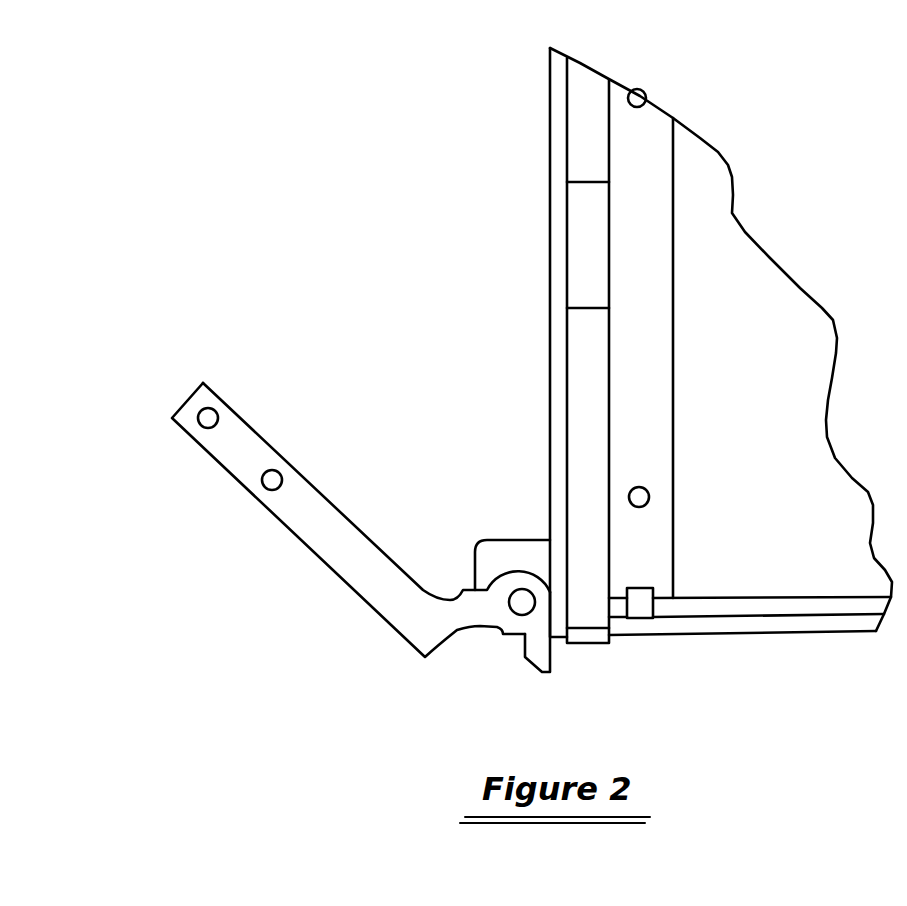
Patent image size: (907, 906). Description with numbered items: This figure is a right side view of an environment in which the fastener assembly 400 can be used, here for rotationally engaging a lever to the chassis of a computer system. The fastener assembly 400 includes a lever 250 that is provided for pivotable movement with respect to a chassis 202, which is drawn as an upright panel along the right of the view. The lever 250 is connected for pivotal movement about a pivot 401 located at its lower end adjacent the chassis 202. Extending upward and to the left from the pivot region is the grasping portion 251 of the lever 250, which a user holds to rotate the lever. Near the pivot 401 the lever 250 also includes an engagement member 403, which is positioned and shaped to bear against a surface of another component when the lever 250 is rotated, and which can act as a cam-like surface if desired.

The chassis 202 is at (550, 420).
The lever 250 is at (170, 379).
The grasping portion 251 is at (345, 533).
The fastener assembly 400 is at (140, 390).
The pivot 401 is at (518, 612).
The engagement member 403 is at (542, 660).